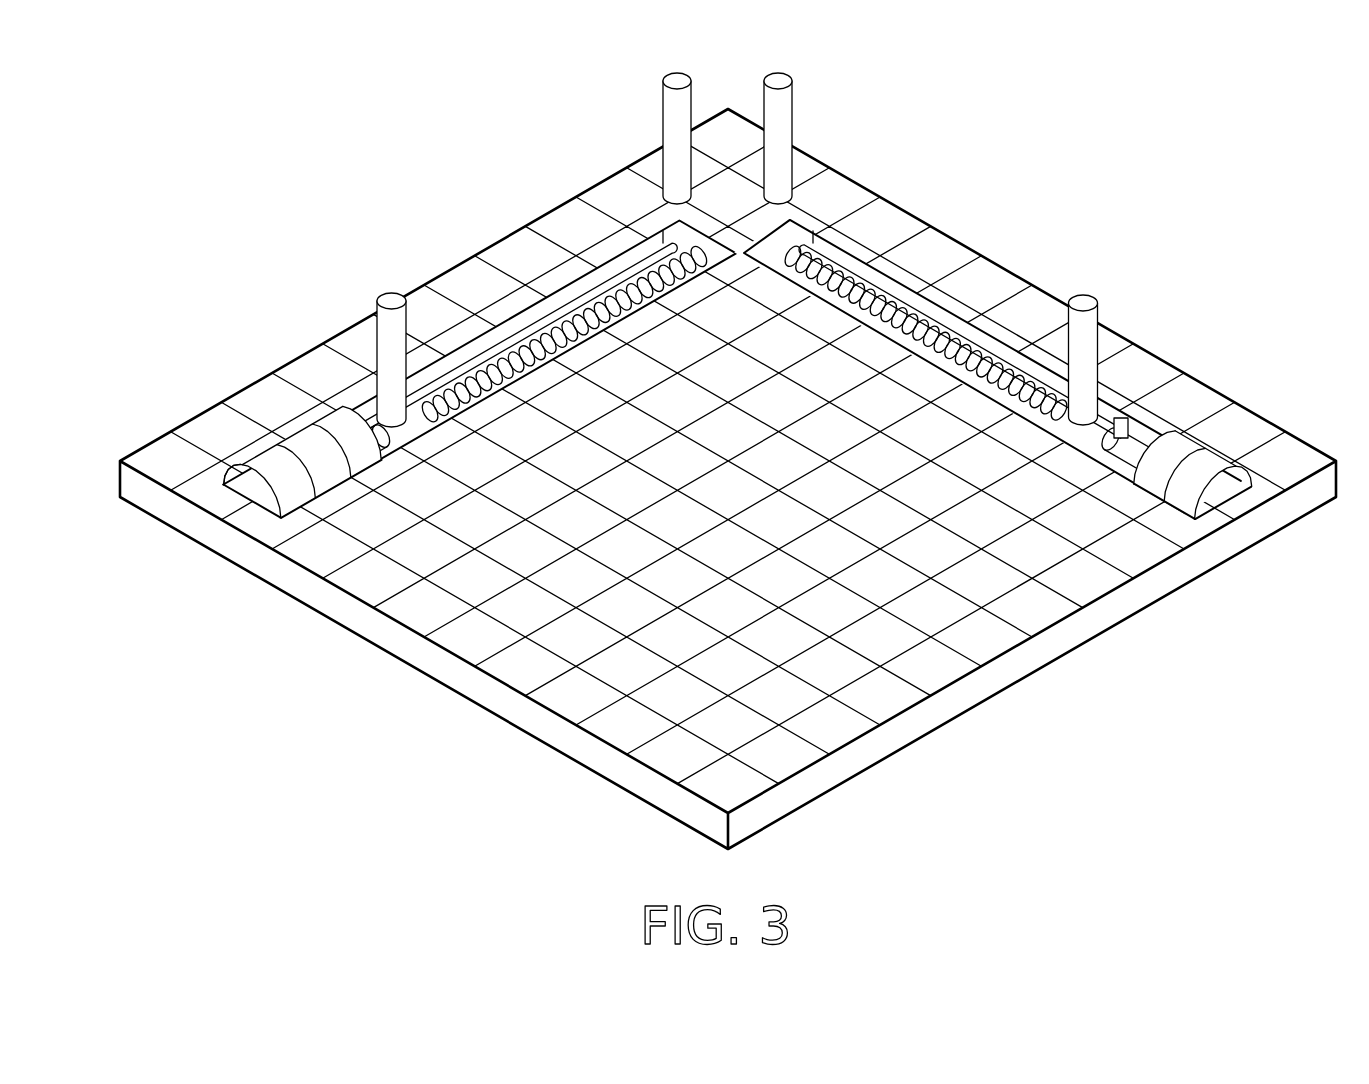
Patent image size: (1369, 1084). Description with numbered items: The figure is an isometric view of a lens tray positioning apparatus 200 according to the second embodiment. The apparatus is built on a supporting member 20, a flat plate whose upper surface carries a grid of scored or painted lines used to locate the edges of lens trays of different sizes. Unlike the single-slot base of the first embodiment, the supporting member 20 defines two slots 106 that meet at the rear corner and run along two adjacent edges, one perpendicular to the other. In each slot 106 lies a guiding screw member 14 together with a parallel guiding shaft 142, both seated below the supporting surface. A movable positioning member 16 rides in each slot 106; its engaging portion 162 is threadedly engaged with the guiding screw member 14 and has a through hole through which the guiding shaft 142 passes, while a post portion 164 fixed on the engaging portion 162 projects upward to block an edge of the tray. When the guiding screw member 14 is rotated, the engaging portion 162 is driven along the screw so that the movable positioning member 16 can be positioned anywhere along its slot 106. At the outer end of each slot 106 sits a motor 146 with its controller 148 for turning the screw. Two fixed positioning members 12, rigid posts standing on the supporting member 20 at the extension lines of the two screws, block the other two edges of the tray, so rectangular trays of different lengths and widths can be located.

The lens tray positioning apparatus 200 is at (706, 449).
The fixed positioning member 12 is at (780, 118).
The guiding screw member 14 is at (480, 376).
The movable positioning member 16 is at (254, 285).
The supporting member 20 is at (1146, 351).
The slot 106 is at (620, 267).
The guiding shaft 142 is at (577, 307).
The motor 146 is at (337, 457).
The controller 148 is at (263, 477).
The engaging portion 162 is at (368, 416).
The post portion 164 is at (394, 341).